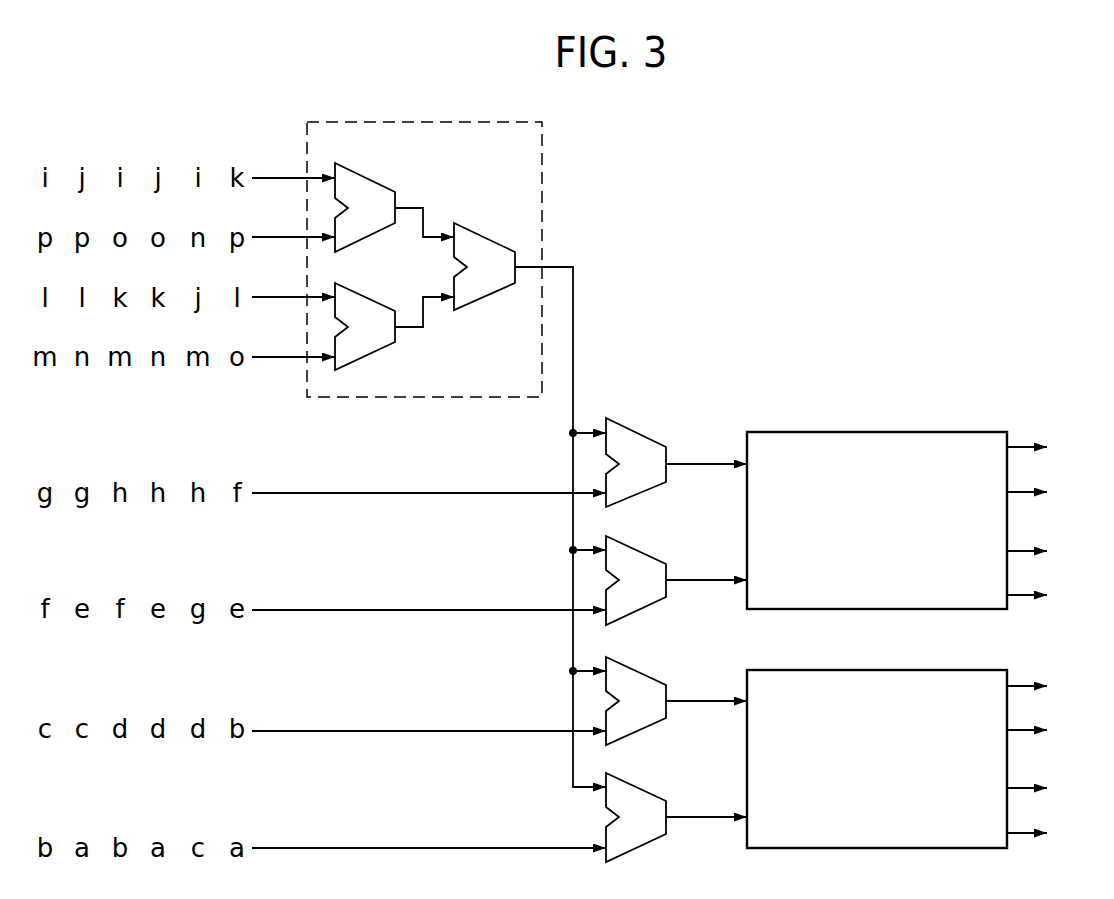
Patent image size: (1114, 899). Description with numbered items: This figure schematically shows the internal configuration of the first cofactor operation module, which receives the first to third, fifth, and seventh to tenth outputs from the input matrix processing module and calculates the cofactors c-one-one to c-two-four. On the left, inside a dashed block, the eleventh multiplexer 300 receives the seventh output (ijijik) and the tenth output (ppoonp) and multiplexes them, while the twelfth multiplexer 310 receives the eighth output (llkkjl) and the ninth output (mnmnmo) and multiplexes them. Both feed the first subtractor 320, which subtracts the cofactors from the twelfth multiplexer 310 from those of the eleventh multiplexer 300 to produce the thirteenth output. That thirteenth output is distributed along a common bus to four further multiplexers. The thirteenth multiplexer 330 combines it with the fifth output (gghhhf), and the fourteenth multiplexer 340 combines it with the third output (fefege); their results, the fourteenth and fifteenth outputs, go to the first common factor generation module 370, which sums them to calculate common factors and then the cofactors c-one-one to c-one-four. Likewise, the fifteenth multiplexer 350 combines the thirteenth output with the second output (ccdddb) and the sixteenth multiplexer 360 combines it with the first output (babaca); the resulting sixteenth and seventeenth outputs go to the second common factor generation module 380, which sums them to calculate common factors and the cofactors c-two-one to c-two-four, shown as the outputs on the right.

The eleventh multiplexer 300 is at (376, 181).
The twelfth multiplexer 310 is at (371, 299).
The first subtractor 320 is at (493, 240).
The thirteenth multiplexer 330 is at (648, 436).
The fourteenth multiplexer 340 is at (648, 553).
The fifteenth multiplexer 350 is at (648, 674).
The sixteenth multiplexer 360 is at (648, 791).
The first common factor generation module 370 is at (979, 431).
The second common factor generation module 380 is at (979, 669).